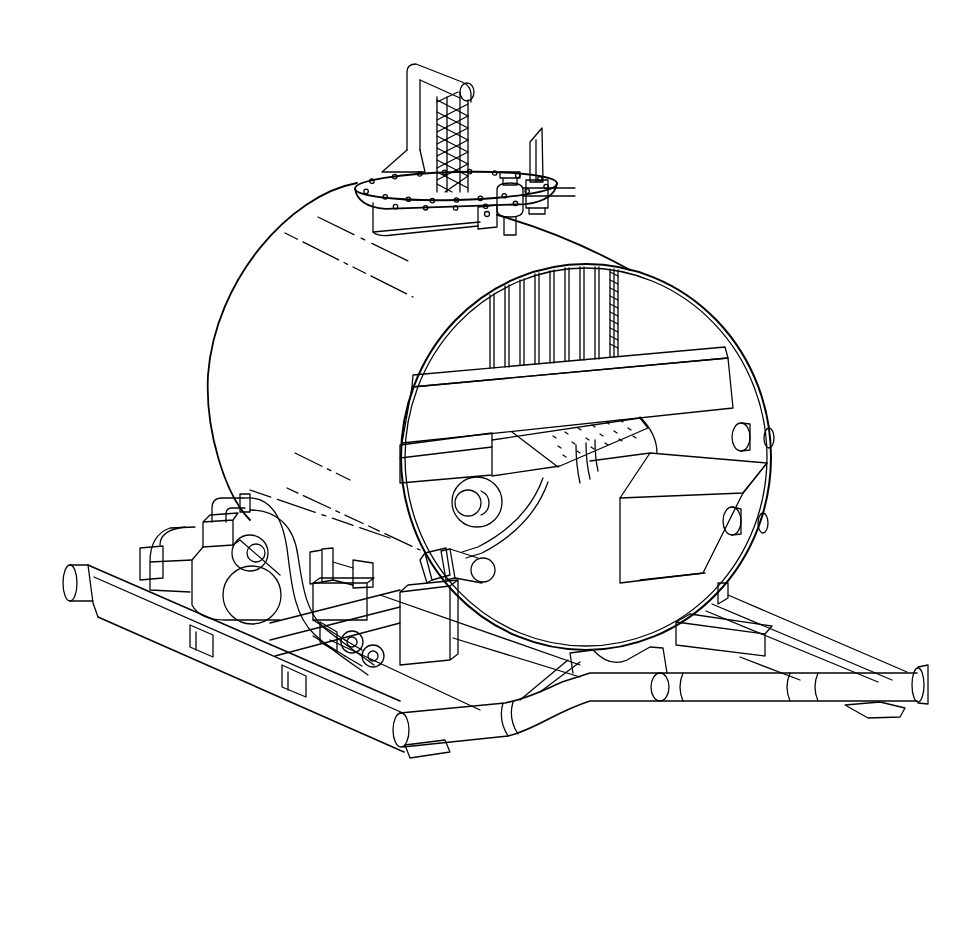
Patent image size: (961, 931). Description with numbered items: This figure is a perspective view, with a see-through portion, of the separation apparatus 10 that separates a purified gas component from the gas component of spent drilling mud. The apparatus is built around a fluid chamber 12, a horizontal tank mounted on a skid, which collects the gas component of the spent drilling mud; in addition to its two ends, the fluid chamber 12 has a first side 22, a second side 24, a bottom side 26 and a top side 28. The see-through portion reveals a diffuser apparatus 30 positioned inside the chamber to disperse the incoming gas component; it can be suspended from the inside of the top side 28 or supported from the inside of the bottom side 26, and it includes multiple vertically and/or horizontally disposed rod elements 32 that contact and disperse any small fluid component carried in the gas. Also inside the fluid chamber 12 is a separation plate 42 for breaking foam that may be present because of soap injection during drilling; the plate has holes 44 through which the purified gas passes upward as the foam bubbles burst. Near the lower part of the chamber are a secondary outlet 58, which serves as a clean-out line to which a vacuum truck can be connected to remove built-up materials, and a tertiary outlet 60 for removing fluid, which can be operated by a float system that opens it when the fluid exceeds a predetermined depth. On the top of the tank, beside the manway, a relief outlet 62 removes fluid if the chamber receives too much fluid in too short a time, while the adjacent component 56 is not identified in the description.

The separation apparatus 10 is at (688, 162).
The fluid chamber 12 is at (245, 297).
The first side 22 is at (324, 383).
The second side 24 is at (602, 564).
The bottom side 26 is at (540, 660).
The top side 28 is at (548, 237).
The diffuser apparatus 30 is at (662, 323).
The rod elements 32 is at (612, 292).
The separation plate 42 is at (657, 453).
The holes 44 is at (570, 467).
The manway flange 56 is at (385, 187).
The secondary outlet 58 is at (474, 552).
The tertiary outlet 60 is at (428, 560).
The relief outlet 62 is at (540, 160).